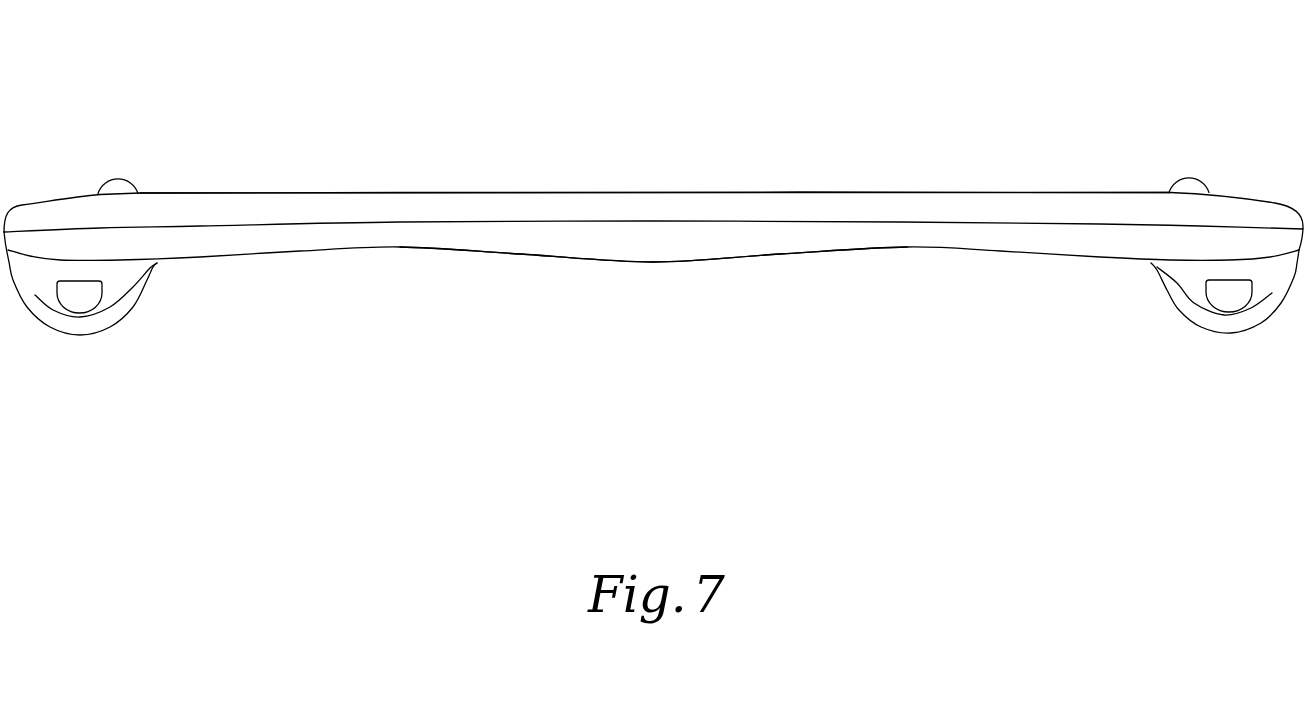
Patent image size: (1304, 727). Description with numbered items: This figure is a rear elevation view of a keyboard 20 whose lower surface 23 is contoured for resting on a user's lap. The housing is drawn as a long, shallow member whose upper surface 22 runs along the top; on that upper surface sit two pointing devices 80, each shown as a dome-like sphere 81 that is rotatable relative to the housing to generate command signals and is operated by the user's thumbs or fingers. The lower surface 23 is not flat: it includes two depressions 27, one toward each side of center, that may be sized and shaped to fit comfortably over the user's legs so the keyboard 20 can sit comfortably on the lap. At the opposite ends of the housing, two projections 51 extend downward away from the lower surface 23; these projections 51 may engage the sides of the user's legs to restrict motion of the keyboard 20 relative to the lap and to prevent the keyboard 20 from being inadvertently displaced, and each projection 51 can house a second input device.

The keyboard 20 is at (825, 138).
The upper surface 22 is at (380, 192).
The lower surface 23 is at (535, 312).
The depressions 27 is at (407, 248).
The projections 51 is at (110, 307).
The pointing device 80 is at (88, 150).
The sphere 81 is at (124, 176).